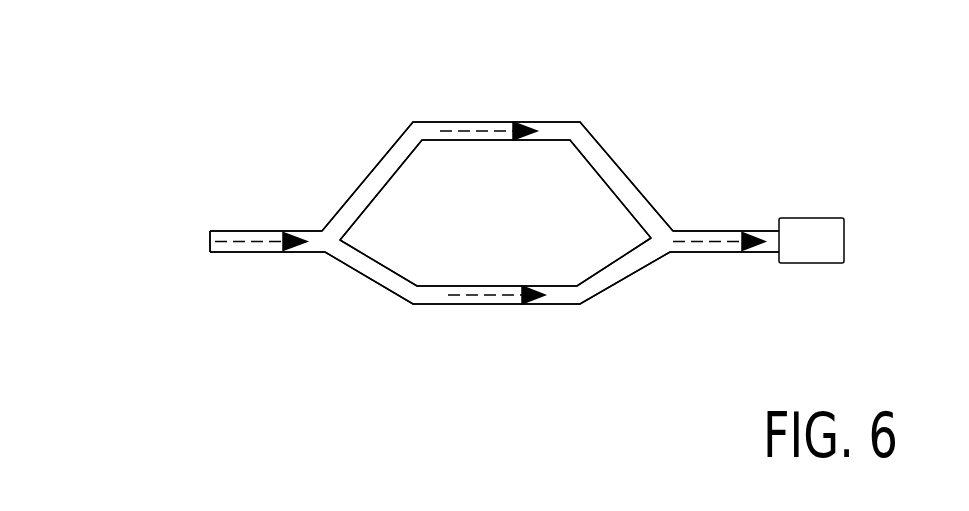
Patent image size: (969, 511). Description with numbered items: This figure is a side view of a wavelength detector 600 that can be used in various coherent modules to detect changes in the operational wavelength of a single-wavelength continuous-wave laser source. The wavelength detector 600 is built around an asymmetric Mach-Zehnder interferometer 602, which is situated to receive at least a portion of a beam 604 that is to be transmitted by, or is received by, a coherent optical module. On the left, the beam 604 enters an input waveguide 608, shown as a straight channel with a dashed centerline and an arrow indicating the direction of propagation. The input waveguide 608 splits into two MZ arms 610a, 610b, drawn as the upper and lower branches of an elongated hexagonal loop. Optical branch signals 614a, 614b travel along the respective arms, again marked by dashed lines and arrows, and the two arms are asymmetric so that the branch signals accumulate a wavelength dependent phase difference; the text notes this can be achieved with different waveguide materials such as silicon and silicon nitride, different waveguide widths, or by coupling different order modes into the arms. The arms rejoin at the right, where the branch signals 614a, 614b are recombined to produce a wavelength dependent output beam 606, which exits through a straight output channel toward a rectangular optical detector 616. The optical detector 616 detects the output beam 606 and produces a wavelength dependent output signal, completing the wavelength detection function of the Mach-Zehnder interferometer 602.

The wavelength detector 600 is at (193, 85).
The asymmetric Mach-Zehnder interferometer 602 is at (672, 155).
The beam 604 is at (233, 238).
The wavelength dependent output beam 606 is at (697, 245).
The input waveguide 608 is at (272, 252).
The MZ arm 610a is at (385, 157).
The MZ arm 610b is at (423, 304).
The optical branch signal 614a is at (487, 130).
The optical branch signal 614b is at (495, 295).
The optical detector 616 is at (792, 218).